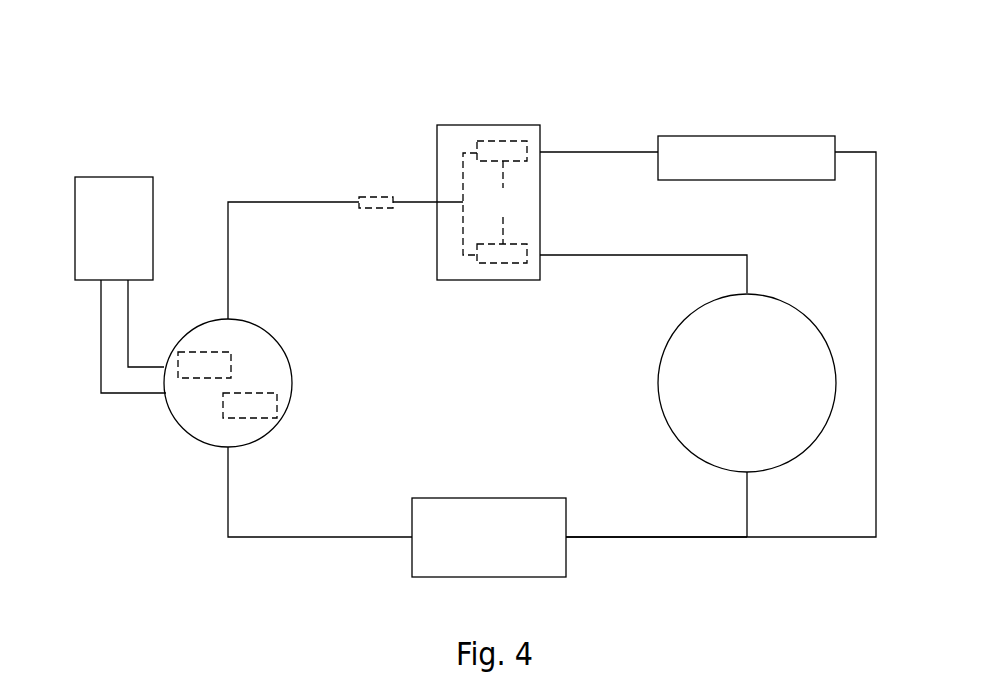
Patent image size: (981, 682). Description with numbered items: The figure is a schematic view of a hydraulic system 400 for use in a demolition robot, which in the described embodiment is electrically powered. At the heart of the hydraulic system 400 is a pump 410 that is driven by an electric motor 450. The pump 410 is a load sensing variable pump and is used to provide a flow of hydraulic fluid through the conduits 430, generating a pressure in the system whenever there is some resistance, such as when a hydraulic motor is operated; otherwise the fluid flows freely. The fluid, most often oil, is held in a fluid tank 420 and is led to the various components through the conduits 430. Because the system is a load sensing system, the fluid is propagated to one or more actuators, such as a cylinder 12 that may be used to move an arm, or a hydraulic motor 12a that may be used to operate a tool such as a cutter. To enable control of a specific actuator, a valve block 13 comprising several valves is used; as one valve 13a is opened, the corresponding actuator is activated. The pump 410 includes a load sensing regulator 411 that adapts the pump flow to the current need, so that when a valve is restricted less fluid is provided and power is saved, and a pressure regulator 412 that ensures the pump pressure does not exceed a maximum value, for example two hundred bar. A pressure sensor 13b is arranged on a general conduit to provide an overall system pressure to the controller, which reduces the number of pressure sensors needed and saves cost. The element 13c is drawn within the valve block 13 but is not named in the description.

The hydraulic system 400 is at (450, 93).
The electric motor 450 is at (92, 177).
The pump 410 is at (200, 442).
The load sensing regulator 411 is at (204, 365).
The pressure regulator 412 is at (250, 405).
The fluid tank 420 is at (488, 498).
The conduits 430 is at (692, 537).
The cylinder 12 is at (720, 162).
The hydraulic motor 12a is at (658, 382).
The valve block 13 is at (437, 255).
The valve 13a is at (502, 192).
The pressure sensor 13b is at (378, 208).
The second valve 13c is at (527, 244).